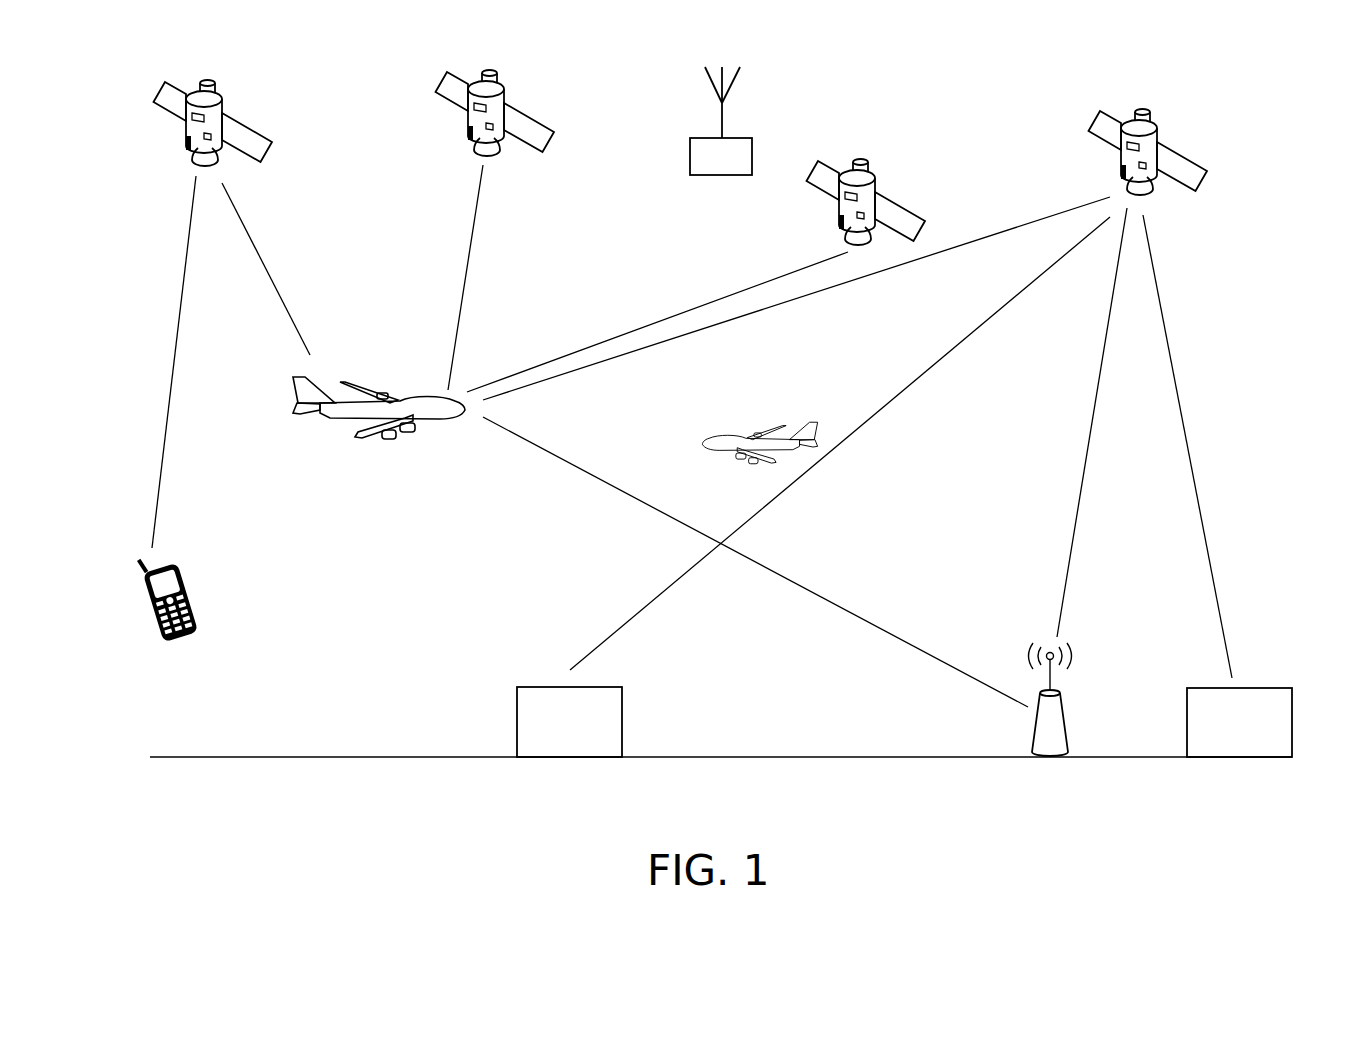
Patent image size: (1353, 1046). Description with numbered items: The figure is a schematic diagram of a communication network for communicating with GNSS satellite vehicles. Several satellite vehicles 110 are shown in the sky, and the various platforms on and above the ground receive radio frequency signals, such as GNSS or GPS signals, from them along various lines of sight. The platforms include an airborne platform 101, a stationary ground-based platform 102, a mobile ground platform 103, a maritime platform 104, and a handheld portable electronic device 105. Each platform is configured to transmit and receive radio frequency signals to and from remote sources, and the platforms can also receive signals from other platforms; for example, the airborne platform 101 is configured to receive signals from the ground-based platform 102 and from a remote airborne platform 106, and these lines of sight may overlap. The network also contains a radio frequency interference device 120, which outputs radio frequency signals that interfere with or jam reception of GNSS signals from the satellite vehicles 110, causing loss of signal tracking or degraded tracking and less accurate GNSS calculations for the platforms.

The airborne platform 101 is at (333, 444).
The ground-based platform 102 is at (1075, 720).
The mobile ground platform 103 is at (503, 722).
The maritime platform 104 is at (1266, 677).
The portable electronic device 105 is at (203, 581).
The remote airborne platform 106 is at (738, 417).
The satellite vehicle 110 is at (249, 105).
The radio frequency interference device 120 is at (745, 112).